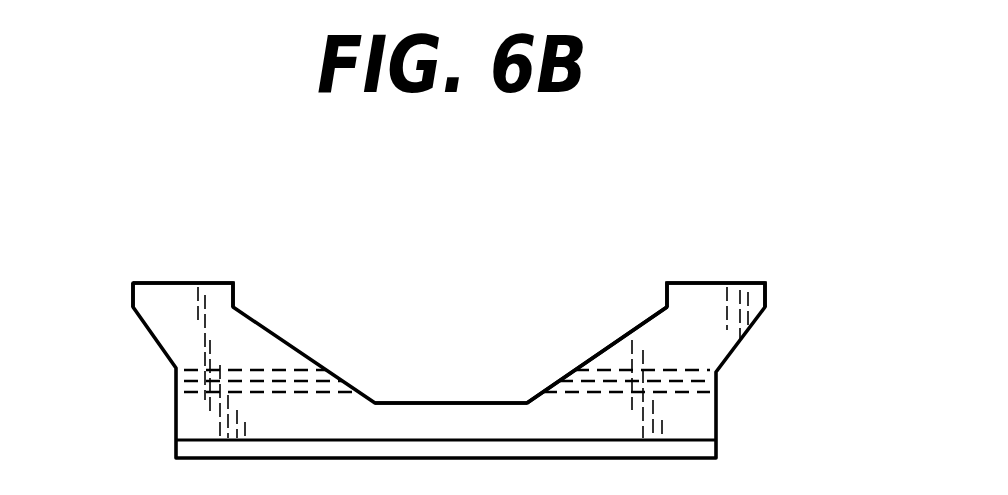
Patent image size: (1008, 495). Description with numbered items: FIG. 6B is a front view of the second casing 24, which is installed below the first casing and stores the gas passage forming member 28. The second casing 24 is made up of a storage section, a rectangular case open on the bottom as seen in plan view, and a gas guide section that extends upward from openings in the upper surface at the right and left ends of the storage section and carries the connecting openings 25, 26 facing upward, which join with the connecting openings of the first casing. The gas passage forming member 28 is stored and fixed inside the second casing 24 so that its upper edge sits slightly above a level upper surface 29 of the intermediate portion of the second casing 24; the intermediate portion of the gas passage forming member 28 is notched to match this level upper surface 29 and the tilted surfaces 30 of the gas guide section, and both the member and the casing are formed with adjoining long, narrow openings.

The second casing 24 is at (403, 401).
The connecting opening 25 is at (182, 282).
The connecting opening 26 is at (722, 282).
The gas passage forming member 28 is at (258, 370).
The level upper surface 29 is at (487, 400).
The tilted surfaces 30 is at (613, 338).